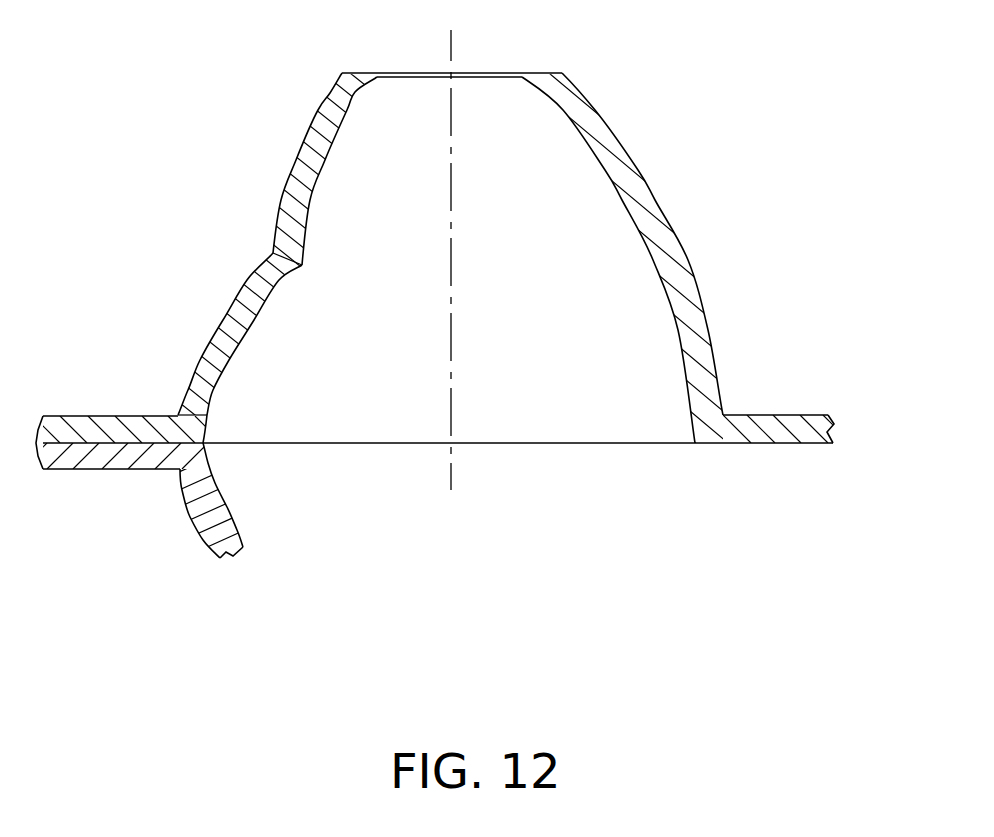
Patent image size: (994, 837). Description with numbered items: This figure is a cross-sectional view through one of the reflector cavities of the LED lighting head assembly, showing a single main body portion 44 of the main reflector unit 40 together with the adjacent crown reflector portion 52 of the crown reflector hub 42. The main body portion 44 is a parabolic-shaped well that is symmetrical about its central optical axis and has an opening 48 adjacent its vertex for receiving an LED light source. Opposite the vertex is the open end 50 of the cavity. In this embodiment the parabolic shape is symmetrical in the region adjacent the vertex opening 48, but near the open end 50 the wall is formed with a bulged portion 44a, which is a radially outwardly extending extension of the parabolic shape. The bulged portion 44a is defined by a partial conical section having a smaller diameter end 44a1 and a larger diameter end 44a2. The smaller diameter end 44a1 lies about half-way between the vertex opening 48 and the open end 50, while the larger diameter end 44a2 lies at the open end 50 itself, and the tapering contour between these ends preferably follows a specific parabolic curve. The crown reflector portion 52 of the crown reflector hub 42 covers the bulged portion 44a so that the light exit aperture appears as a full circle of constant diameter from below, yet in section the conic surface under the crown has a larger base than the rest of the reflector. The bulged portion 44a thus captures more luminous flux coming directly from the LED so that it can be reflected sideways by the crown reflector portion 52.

The main reflector unit 40 is at (597, 110).
The crown reflector hub 42 is at (113, 472).
The main body portion 44 is at (293, 160).
The bulged portion 44a is at (212, 328).
The smaller diameter end 44a1 is at (302, 265).
The larger diameter end 44a2 is at (205, 441).
The opening 48 is at (484, 72).
The open end 50 is at (582, 443).
The crown reflector portion 52 is at (200, 538).